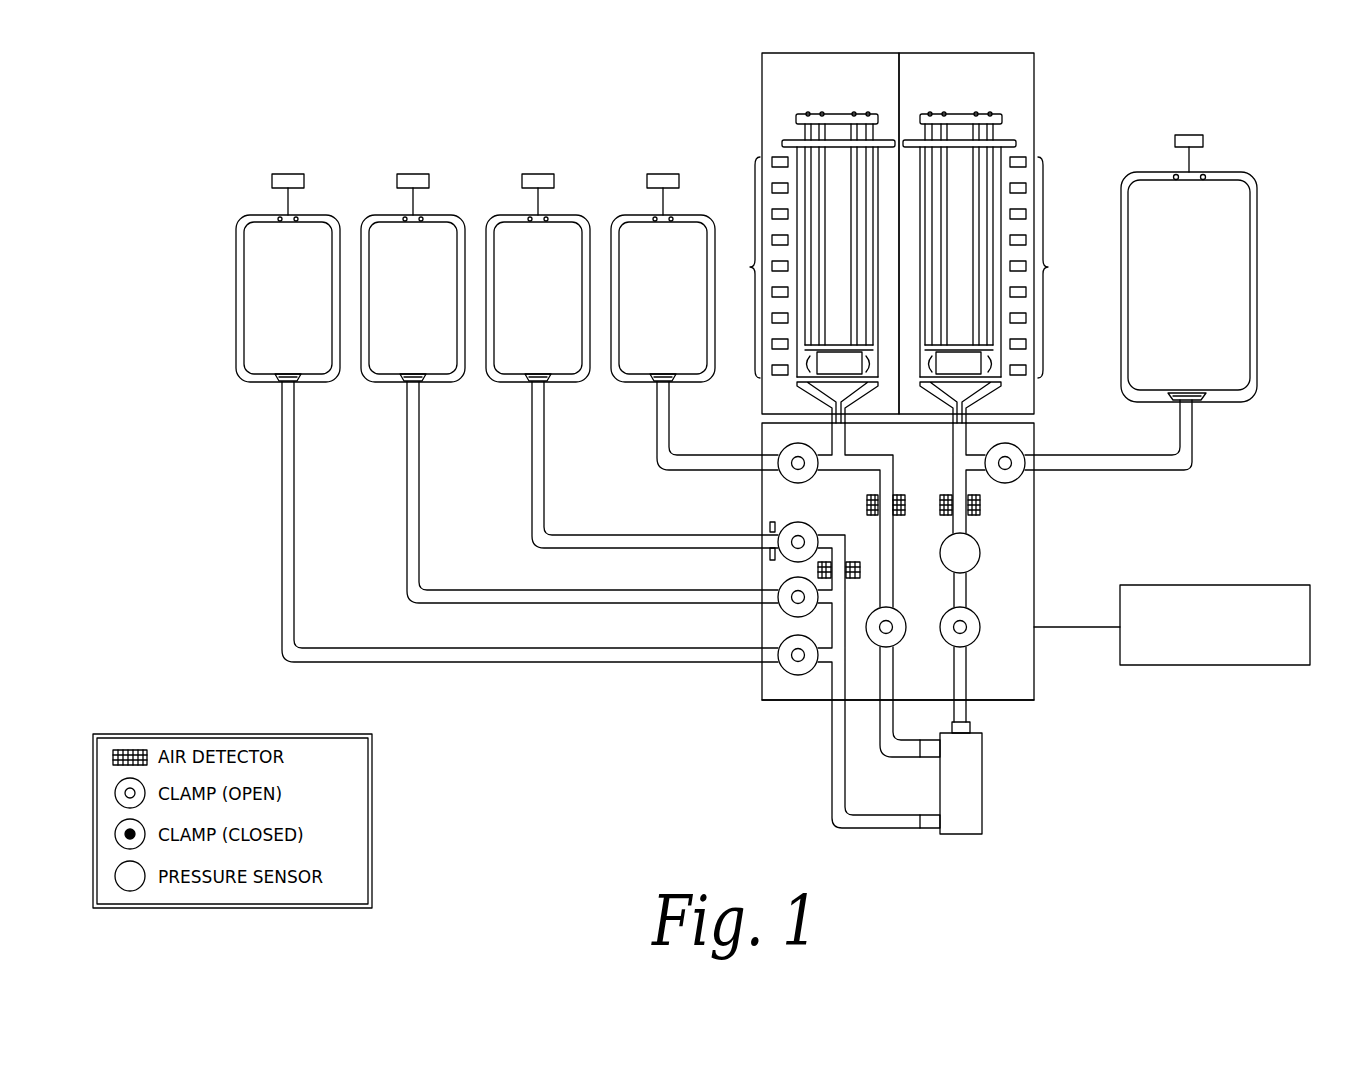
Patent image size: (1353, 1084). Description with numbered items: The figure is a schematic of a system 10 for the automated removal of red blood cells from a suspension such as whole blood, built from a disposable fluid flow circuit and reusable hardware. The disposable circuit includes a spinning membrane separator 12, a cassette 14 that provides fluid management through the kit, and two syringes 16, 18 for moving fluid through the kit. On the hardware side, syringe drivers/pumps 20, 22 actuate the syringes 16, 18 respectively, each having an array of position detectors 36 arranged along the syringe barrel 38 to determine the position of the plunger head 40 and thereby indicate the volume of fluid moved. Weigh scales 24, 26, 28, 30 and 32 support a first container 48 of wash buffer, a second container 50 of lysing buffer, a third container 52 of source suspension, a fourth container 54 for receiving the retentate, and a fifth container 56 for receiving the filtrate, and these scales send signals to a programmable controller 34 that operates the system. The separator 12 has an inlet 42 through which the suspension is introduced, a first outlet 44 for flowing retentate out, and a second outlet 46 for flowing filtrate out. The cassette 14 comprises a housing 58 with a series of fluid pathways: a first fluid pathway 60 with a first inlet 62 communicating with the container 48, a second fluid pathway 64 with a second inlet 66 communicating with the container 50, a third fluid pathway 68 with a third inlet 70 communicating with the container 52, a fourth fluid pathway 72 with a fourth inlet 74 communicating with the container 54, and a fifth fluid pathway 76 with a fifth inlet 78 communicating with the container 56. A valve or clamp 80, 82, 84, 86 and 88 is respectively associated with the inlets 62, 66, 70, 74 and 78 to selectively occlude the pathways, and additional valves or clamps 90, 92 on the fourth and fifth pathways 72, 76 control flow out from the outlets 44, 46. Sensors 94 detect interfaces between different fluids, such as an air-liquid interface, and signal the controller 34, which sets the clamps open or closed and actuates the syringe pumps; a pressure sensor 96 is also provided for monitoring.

The system 10 is at (330, 113).
The spinning membrane separator 12 is at (975, 777).
The cassette 14 is at (1056, 558).
The syringe 16 is at (822, 114).
The syringe 18 is at (944, 114).
The syringe driver/pump 20 is at (762, 70).
The syringe driver/pump 22 is at (1034, 70).
The weigh scale 24 is at (280, 173).
The weigh scale 26 is at (405, 173).
The weigh scale 28 is at (530, 173).
The weigh scale 30 is at (655, 173).
The weigh scale 32 is at (1196, 135).
The programmable controller 34 is at (1270, 666).
The position detectors 36 is at (897, 267).
The syringe barrel 38 is at (795, 158).
The plunger head 40 is at (797, 381).
The inlet 42 is at (931, 829).
The first outlet 44 is at (928, 757).
The second outlet 46 is at (971, 727).
The first container 48 is at (288, 298).
The second container 50 is at (413, 298).
The third container 52 is at (538, 298).
The fourth container 54 is at (663, 298).
The fifth container 56 is at (1189, 287).
The housing 58 is at (768, 701).
The first fluid pathway 60 is at (823, 701).
The first inlet 62 is at (765, 651).
The second fluid pathway 64 is at (818, 568).
The second inlet 66 is at (765, 593).
The third fluid pathway 68 is at (827, 530).
The third inlet 70 is at (765, 539).
The fourth fluid pathway 72 is at (765, 456).
The fourth inlet 74 is at (765, 471).
The fifth fluid pathway 76 is at (998, 446).
The fifth inlet 78 is at (1027, 470).
The valve or clamp 80 is at (785, 642).
The valve or clamp 82 is at (772, 553).
The valve or clamp 84 is at (772, 522).
The valve or clamp 86 is at (788, 448).
The valve or clamp 88 is at (1006, 484).
The valve or clamp 90 is at (899, 644).
The valve or clamp 92 is at (973, 644).
The sensors 94 is at (946, 495).
The pressure sensor 96 is at (981, 562).